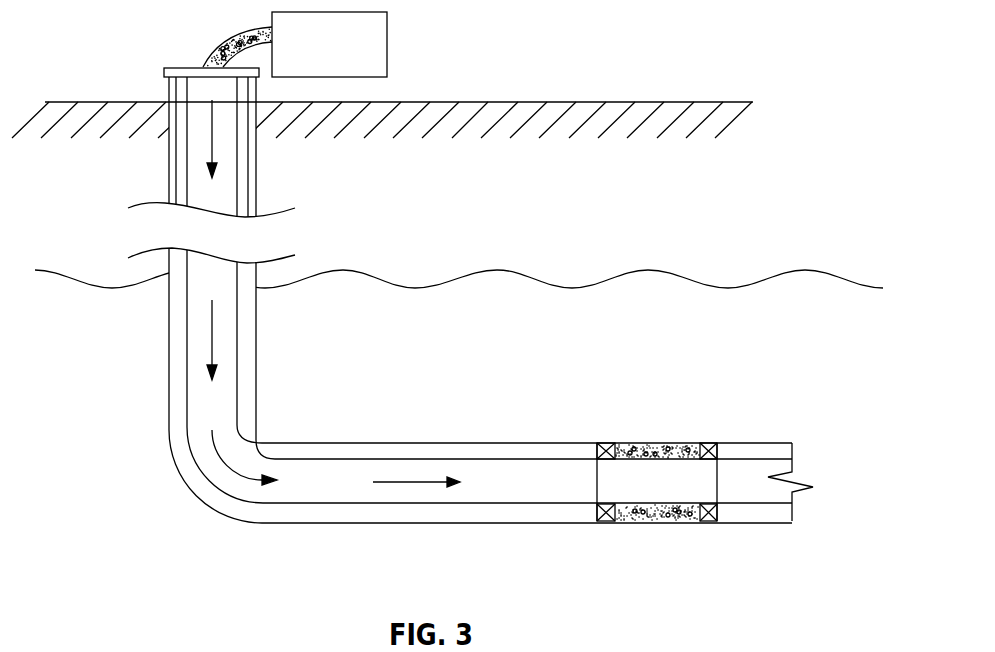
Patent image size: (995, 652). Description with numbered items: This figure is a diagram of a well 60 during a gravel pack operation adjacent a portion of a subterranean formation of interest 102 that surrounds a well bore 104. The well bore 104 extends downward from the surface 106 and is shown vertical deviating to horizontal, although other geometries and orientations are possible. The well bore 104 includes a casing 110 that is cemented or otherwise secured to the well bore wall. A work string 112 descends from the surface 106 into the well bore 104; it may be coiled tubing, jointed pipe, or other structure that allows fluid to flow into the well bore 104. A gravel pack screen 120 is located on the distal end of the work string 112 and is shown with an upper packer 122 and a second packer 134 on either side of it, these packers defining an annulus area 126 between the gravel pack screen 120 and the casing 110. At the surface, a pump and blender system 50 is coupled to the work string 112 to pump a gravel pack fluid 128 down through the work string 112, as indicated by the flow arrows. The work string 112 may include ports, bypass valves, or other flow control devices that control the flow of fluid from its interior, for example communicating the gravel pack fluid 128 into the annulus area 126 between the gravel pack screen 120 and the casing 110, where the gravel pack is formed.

The pump and blender system 50 is at (325, 59).
The well 60 is at (192, 512).
The subterranean formation of interest 102 is at (488, 318).
The well bore 104 is at (180, 175).
The surface 106 is at (578, 102).
The casing 110 is at (172, 197).
The work string 112 is at (186, 376).
The gravel pack screen 120 is at (676, 453).
The upper packer 122 is at (603, 442).
The annulus area 126 is at (667, 520).
The gravel pack fluid 128 is at (237, 35).
The packer 134 is at (710, 442).